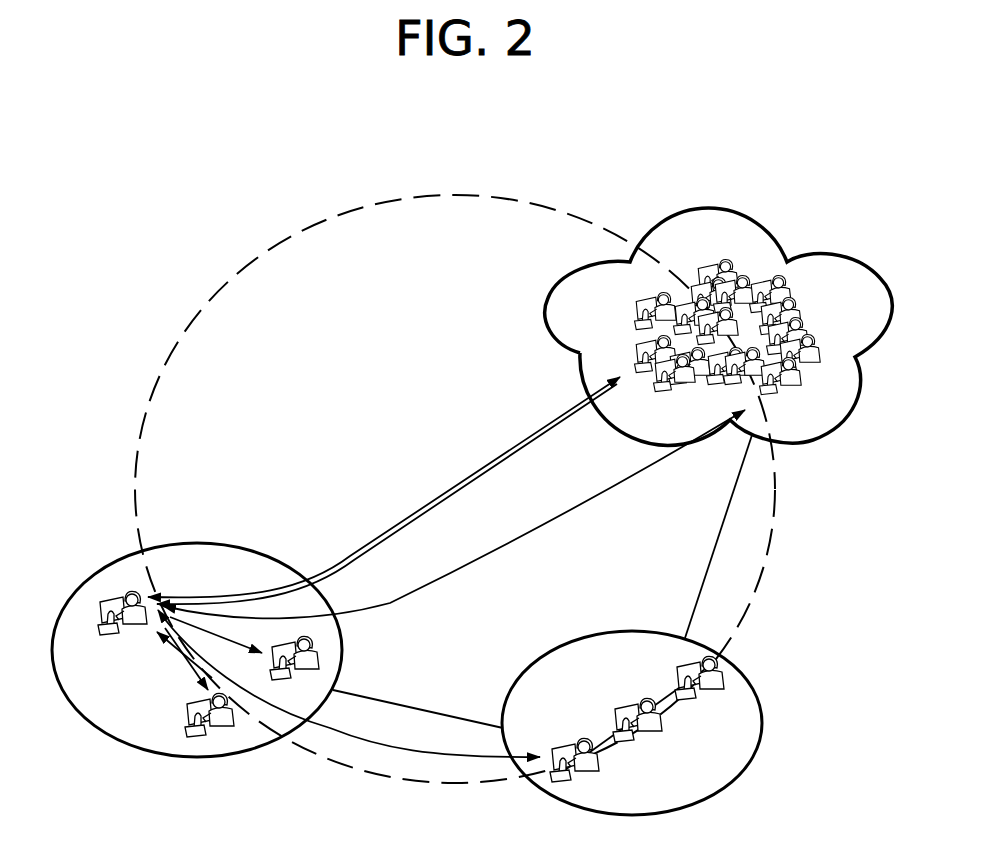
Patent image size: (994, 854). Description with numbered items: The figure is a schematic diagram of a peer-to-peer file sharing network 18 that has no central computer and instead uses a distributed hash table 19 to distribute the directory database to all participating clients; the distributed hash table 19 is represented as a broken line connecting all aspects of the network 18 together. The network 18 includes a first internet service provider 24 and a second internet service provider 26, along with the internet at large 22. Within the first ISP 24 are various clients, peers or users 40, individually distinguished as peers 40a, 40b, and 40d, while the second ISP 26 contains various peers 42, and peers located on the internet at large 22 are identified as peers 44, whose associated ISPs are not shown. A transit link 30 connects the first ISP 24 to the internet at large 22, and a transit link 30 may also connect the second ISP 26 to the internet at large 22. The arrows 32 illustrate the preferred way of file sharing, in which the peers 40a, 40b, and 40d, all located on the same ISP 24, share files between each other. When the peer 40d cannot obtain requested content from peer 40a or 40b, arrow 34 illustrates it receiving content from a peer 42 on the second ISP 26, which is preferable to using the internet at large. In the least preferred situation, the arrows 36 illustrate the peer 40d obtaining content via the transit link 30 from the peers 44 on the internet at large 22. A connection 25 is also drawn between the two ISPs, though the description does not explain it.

The peer-to-peer file sharing network 18 is at (186, 308).
The distributed hash table 19 is at (319, 218).
The internet at large 22 is at (626, 180).
The first internet service provider 24 is at (205, 542).
The connection between local networks 25 is at (410, 705).
The second internet service provider 26 is at (763, 723).
The transit link 30 is at (433, 500).
The arrows 32 is at (182, 660).
The arrow 34 is at (415, 757).
The arrows 36 is at (547, 527).
The peers 40 is at (188, 585).
The peer 40a is at (308, 678).
The peer 40b is at (220, 733).
The peer 40d is at (100, 612).
The peers 42 is at (661, 746).
The peers on the internet at large 44 is at (805, 268).